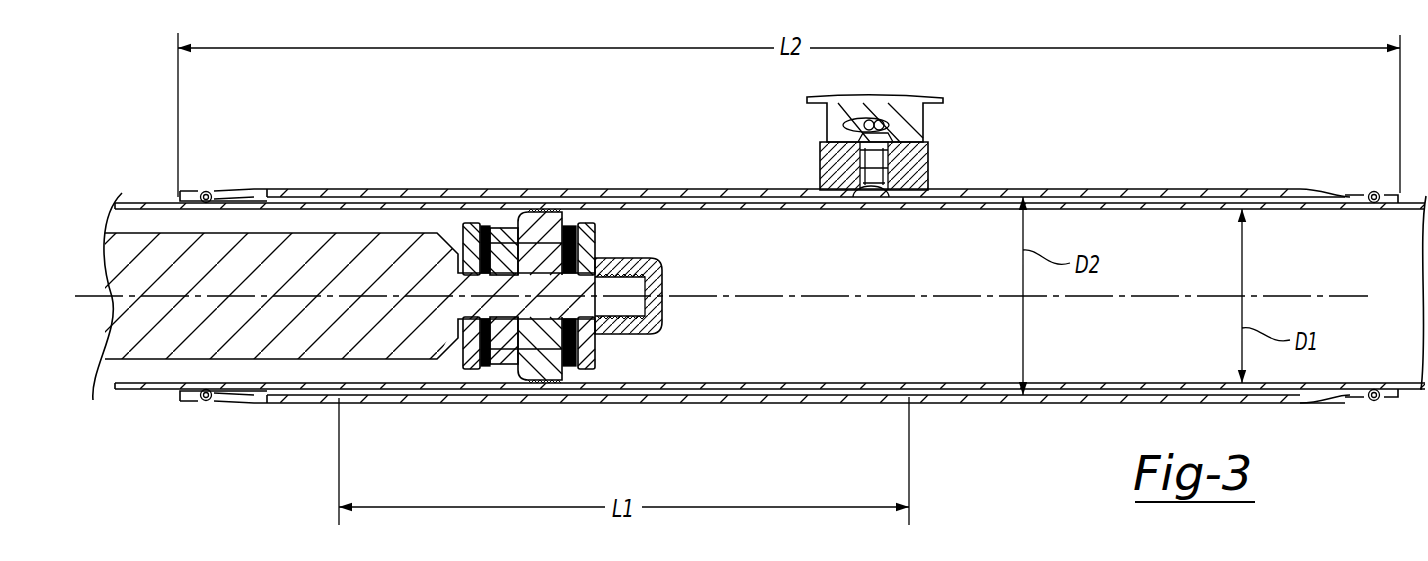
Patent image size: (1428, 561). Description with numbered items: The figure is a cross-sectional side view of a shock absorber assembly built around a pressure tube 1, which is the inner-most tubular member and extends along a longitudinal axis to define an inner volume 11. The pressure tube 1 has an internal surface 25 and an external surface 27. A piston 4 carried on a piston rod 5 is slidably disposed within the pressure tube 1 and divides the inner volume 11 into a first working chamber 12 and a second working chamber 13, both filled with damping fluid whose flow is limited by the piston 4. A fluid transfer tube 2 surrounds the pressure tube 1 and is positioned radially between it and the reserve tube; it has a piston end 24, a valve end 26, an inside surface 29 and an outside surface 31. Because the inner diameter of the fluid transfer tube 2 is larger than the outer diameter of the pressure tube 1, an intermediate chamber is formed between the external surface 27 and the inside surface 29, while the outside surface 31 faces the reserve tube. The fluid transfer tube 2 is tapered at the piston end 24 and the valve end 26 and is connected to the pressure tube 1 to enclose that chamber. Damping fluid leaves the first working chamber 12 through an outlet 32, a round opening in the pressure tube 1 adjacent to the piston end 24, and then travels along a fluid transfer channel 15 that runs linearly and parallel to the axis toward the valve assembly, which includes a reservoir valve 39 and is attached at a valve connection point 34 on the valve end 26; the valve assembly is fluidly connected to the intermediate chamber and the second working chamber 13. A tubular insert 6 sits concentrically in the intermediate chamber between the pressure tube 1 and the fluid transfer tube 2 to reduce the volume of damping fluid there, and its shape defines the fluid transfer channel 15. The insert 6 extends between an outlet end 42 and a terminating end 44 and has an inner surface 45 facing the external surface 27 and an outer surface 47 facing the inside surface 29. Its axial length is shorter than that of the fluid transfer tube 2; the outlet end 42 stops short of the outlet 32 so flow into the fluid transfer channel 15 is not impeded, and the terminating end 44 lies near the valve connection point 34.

The pressure tube 1 is at (152, 199).
The fluid transfer tube 2 is at (461, 190).
The piston 4 is at (600, 238).
The piston rod 5 is at (250, 360).
The insert 6 is at (829, 393).
The inner volume 11 is at (635, 222).
The first working chamber 12 is at (397, 224).
The second working chamber 13 is at (772, 353).
The fluid transfer channel 15 is at (713, 203).
The piston end 24 is at (188, 394).
The internal surface 25 is at (1152, 211).
The valve end 26 is at (1393, 193).
The external surface 27 is at (1127, 394).
The inside surface 29 is at (1110, 395).
The outside surface 31 is at (1141, 190).
The outlet 32 is at (300, 200).
The valve connection point 34 is at (884, 192).
The reservoir valve 39 is at (818, 155).
The outlet end 42 is at (333, 394).
The terminating end 44 is at (912, 391).
The inner surface 45 is at (663, 384).
The outer surface 47 is at (629, 404).